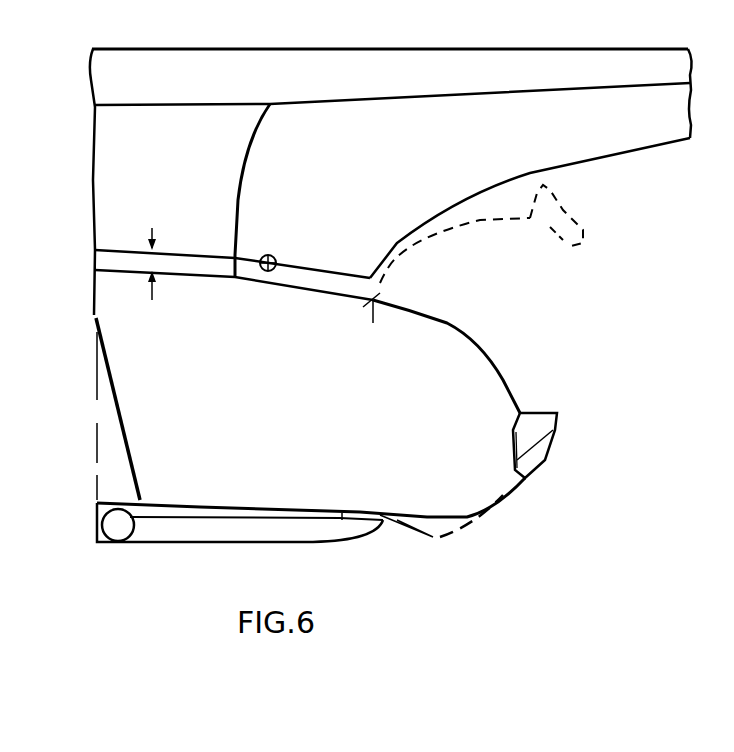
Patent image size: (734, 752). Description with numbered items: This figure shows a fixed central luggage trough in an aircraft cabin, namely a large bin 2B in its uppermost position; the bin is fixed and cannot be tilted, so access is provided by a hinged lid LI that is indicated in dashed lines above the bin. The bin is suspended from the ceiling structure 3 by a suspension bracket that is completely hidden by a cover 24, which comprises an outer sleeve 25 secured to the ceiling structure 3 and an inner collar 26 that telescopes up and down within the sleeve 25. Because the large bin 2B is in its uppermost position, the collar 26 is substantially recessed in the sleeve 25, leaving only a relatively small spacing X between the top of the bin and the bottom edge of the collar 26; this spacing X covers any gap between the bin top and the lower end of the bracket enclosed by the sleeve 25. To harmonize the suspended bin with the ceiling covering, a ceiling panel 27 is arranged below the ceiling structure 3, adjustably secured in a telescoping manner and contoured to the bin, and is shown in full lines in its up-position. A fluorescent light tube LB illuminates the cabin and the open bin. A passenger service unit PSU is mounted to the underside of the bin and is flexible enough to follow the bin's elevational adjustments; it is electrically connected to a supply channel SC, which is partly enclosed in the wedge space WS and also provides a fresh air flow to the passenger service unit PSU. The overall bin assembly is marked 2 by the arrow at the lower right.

The ceiling structure 3 is at (207, 62).
The ceiling panel 27 is at (393, 123).
The outer sleeve 25 is at (191, 153).
The cover 24 is at (264, 180).
The inner collar 26 is at (213, 265).
The spacing X is at (157, 262).
The fluorescent light tube LB is at (278, 259).
The hinged lid LI is at (560, 213).
The large bin 2B is at (463, 345).
The assembly 2 is at (359, 475).
The wedge space WS is at (118, 477).
The supply channel SC is at (122, 547).
The passenger service unit PSU is at (262, 528).